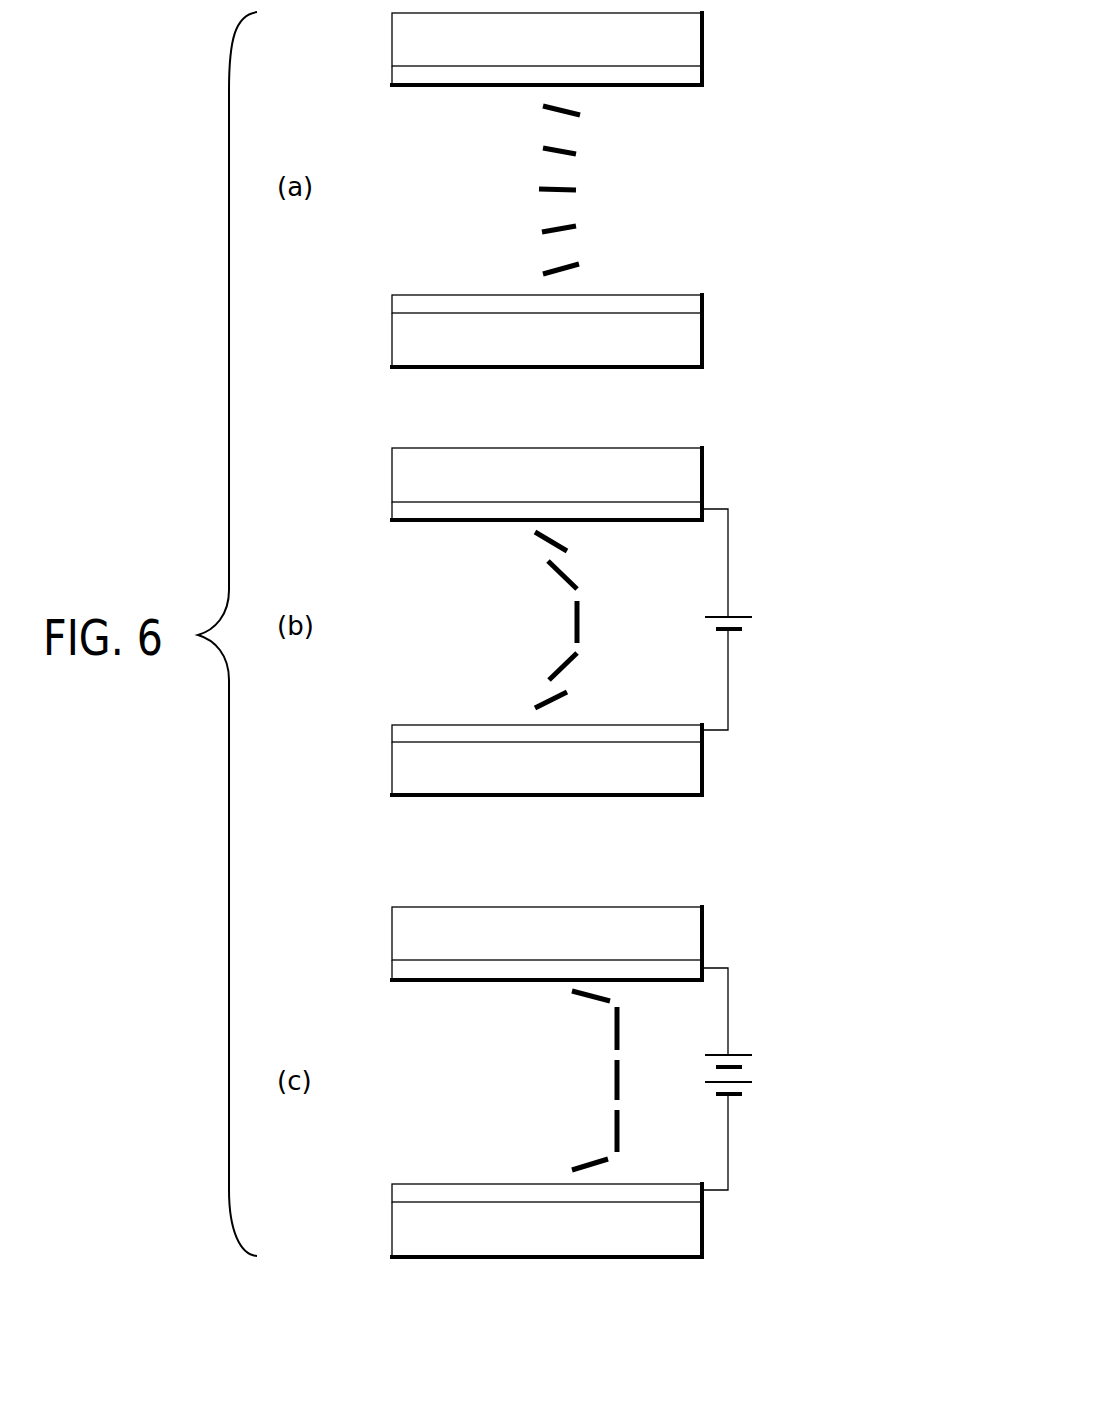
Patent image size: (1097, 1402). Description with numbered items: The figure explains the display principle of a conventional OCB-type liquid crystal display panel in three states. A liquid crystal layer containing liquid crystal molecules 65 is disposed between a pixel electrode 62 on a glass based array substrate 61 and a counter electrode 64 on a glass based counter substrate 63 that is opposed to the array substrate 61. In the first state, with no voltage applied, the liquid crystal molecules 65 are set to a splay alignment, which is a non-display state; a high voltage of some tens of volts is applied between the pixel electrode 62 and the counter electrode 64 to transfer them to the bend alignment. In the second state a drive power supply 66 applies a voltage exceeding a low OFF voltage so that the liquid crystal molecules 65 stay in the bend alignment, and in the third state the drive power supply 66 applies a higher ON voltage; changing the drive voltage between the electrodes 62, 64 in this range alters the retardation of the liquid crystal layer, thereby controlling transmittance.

The array substrate 61 is at (695, 345).
The pixel electrode 62 is at (695, 304).
The counter substrate 63 is at (695, 41).
The counter electrode 64 is at (695, 77).
The liquid crystal molecules 65 is at (585, 187).
The drive power supply 66 is at (705, 621).